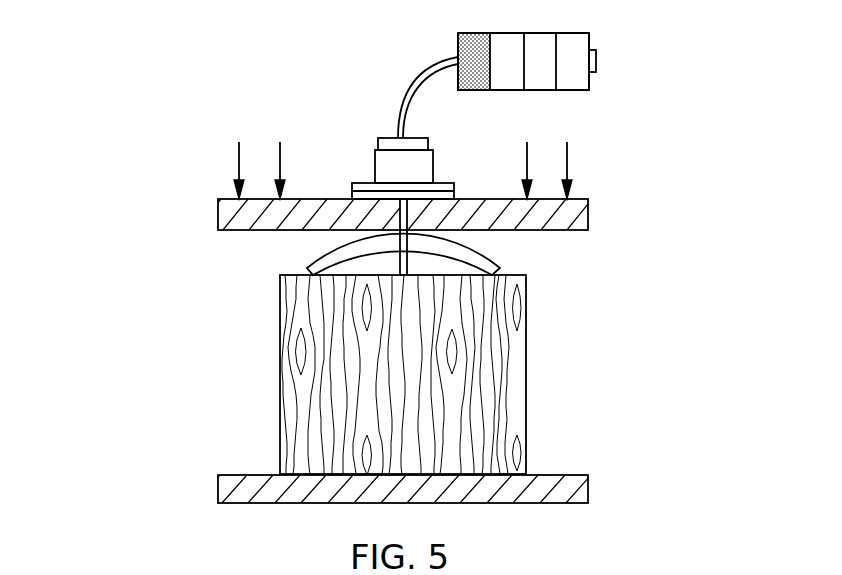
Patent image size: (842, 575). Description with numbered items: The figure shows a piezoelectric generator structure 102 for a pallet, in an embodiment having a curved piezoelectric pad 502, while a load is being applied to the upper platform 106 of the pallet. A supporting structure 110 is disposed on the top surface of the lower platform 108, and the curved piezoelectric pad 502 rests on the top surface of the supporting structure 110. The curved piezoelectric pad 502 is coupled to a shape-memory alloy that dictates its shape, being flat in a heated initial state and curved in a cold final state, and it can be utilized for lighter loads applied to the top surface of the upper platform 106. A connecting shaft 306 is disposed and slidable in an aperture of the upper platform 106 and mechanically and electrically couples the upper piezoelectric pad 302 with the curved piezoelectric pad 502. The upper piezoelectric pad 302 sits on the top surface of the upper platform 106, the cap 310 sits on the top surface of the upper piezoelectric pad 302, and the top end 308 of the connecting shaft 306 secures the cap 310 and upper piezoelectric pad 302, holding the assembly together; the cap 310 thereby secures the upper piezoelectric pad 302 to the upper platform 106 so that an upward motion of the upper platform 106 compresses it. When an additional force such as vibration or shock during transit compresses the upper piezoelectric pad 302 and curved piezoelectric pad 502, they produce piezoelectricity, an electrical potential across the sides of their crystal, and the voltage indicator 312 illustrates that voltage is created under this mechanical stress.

The piezoelectric generator structure 102 is at (185, 139).
The upper platform 106 is at (233, 232).
The lower platform 108 is at (218, 488).
The supporting structure 110 is at (280, 370).
The upper piezoelectric pad 302 is at (352, 195).
The connecting shaft 306 is at (407, 265).
The top end 308 is at (390, 137).
The cap 310 is at (433, 166).
The voltage indicator 312 is at (574, 33).
The curved piezoelectric pad 502 is at (481, 254).